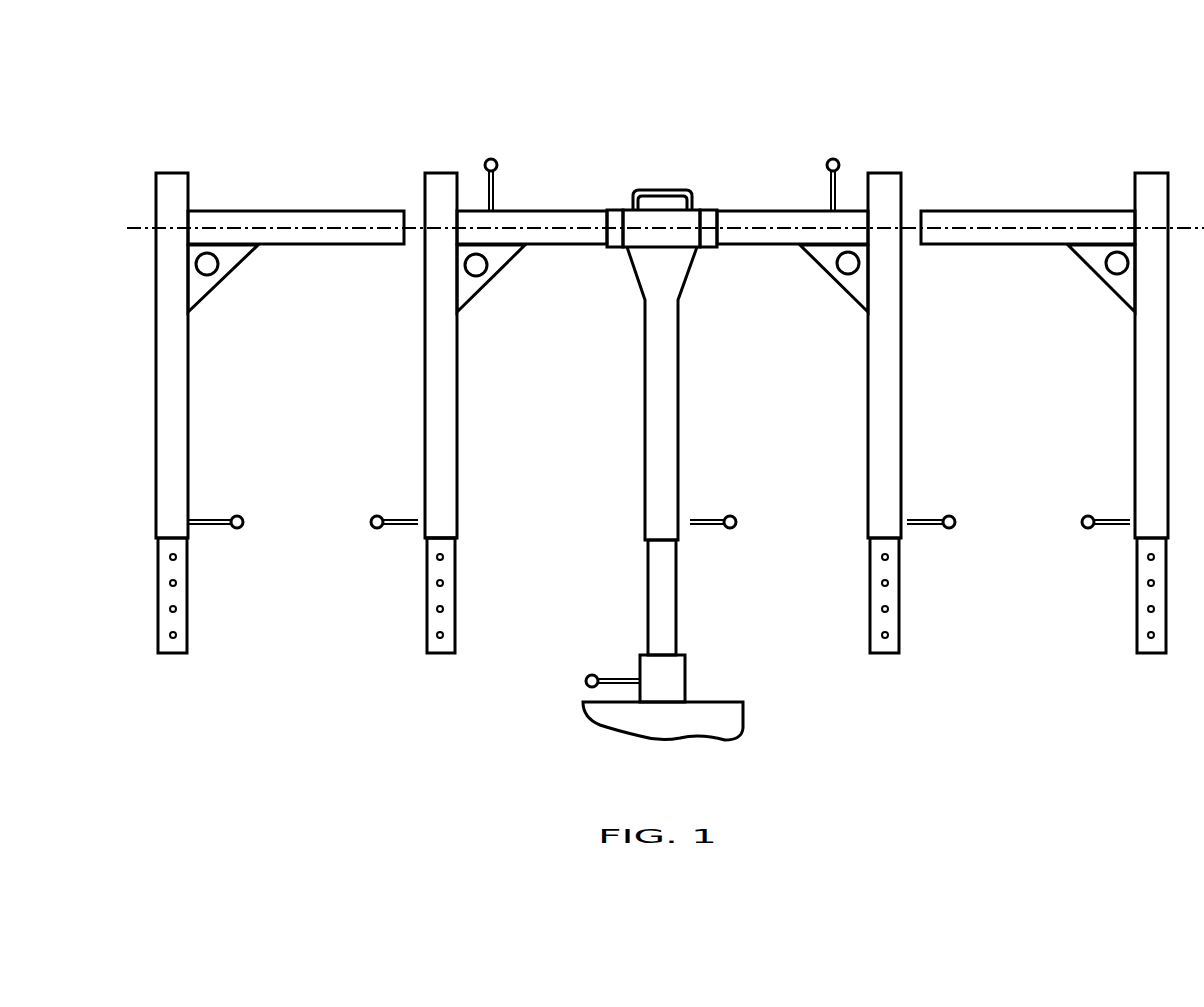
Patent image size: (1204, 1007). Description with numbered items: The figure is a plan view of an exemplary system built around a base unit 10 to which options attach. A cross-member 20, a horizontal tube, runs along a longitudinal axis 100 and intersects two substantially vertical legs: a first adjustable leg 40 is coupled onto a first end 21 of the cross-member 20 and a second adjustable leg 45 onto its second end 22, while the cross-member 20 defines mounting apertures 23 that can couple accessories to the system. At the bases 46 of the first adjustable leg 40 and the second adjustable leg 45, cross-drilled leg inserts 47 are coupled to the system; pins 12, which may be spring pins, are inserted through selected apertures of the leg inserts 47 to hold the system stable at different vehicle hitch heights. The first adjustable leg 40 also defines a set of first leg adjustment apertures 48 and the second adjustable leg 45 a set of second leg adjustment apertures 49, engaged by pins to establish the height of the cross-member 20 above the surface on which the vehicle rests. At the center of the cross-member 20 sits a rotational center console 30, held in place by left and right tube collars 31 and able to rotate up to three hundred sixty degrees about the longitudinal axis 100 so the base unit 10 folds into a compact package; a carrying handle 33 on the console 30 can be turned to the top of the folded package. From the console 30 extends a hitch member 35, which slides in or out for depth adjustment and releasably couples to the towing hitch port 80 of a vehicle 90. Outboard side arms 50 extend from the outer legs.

The base unit 10 is at (665, 98).
The longitudinal axis 100 is at (135, 226).
The pins 12 is at (497, 193).
The cross-member 20 is at (563, 210).
The first end 21 is at (462, 208).
The second end 22 is at (859, 205).
The mounting apertures 23 is at (662, 313).
The rotational center console 30 is at (682, 308).
The tube collars 31 is at (610, 208).
The carrying handle 33 is at (650, 190).
The hitch member 35 is at (680, 600).
The first adjustable leg 40 is at (460, 404).
The second adjustable leg 45 is at (867, 460).
The bases 46 is at (457, 540).
The leg inserts 47 is at (662, 557).
The first leg adjustment apertures 48 is at (438, 583).
The second leg adjustment apertures 49 is at (887, 583).
The side arm 50 is at (310, 210).
The towing hitch port 80 is at (687, 682).
The vehicle 90 is at (674, 731).